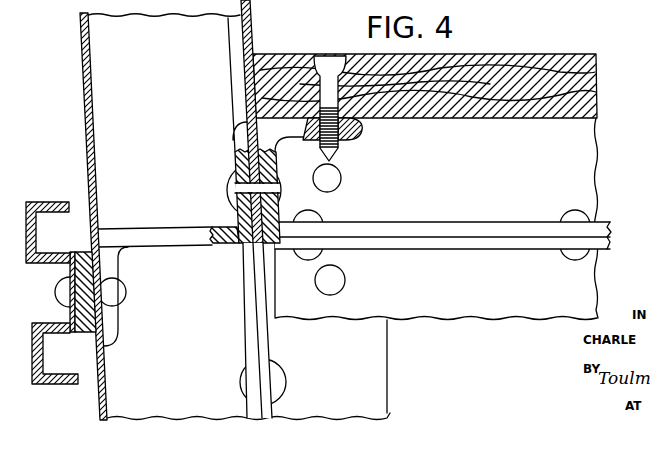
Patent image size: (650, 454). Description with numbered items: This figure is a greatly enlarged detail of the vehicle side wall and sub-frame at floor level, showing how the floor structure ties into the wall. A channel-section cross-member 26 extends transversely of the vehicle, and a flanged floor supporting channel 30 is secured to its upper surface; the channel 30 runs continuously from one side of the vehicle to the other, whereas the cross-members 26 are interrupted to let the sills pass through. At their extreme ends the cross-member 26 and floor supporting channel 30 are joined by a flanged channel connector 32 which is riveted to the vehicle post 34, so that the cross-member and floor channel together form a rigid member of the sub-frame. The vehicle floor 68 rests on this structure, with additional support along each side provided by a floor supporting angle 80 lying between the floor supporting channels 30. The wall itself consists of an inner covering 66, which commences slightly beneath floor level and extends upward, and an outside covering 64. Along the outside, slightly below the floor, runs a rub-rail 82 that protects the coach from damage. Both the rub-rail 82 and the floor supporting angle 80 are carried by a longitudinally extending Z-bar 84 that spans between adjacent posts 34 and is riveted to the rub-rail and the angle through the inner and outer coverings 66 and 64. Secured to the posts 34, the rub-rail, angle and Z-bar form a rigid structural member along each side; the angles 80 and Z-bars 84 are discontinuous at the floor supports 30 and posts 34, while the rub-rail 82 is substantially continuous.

The cross-member 26 is at (463, 293).
The floor supporting channel 30 is at (577, 187).
The flanged channel connector 32 is at (336, 403).
The vehicle post 34 is at (183, 296).
The outside covering 64 is at (83, 73).
The inner covering 66 is at (251, 16).
The vehicle floor 68 is at (555, 55).
The floor supporting angle 80 is at (362, 127).
The rub-rail 82 is at (51, 202).
The Z-bar 84 is at (184, 228).